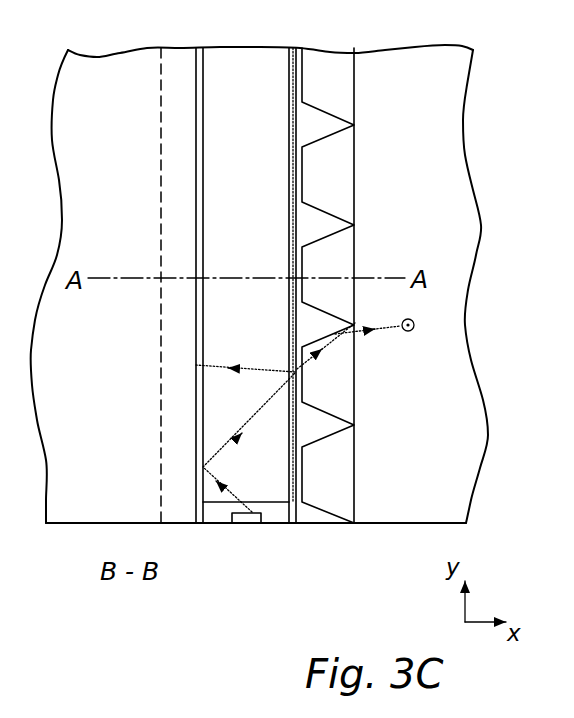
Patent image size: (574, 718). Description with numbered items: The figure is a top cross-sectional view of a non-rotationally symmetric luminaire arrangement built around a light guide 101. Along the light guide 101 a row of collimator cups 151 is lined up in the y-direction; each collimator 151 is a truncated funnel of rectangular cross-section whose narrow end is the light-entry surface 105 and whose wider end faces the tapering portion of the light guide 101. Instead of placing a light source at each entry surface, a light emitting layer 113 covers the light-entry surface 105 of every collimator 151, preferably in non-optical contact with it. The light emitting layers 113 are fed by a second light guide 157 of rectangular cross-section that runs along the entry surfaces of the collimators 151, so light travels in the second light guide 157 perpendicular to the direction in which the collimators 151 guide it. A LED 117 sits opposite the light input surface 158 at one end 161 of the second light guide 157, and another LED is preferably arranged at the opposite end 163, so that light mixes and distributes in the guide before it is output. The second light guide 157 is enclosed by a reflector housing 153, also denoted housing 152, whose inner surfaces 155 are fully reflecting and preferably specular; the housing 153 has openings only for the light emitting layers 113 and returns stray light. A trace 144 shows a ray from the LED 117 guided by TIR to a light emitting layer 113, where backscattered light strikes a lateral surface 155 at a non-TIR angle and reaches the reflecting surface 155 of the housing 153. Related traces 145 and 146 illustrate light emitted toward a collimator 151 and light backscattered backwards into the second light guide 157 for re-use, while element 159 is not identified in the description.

The light guide 101 is at (408, 483).
The light-entry surface 105 is at (297, 173).
The light emitting layer 113 is at (298, 189).
The LED 117 is at (245, 520).
The trace of a light ray 144 is at (226, 452).
The ray trace 145 is at (403, 333).
The ray trace 146 is at (222, 365).
The collimator cup 151 is at (340, 393).
The housing 152 is at (315, 406).
The reflector housing 153 is at (300, 218).
The inner reflecting surface 155 is at (292, 233).
The second light guide 157 is at (208, 493).
The light input surface 158 is at (278, 507).
The side wall 159 is at (207, 432).
The end of the second light guide 161 is at (210, 352).
The opposite end of the light guide 163 is at (217, 58).